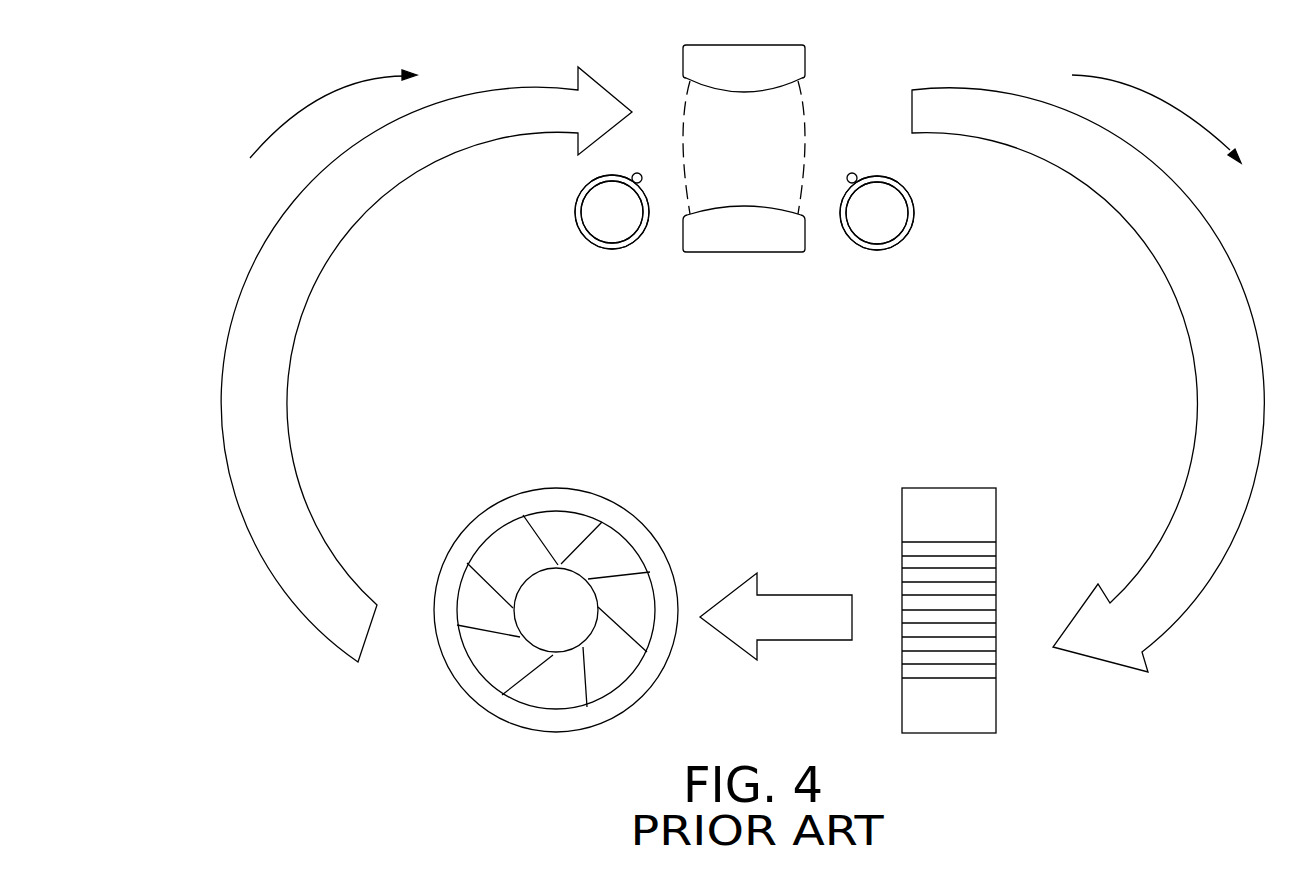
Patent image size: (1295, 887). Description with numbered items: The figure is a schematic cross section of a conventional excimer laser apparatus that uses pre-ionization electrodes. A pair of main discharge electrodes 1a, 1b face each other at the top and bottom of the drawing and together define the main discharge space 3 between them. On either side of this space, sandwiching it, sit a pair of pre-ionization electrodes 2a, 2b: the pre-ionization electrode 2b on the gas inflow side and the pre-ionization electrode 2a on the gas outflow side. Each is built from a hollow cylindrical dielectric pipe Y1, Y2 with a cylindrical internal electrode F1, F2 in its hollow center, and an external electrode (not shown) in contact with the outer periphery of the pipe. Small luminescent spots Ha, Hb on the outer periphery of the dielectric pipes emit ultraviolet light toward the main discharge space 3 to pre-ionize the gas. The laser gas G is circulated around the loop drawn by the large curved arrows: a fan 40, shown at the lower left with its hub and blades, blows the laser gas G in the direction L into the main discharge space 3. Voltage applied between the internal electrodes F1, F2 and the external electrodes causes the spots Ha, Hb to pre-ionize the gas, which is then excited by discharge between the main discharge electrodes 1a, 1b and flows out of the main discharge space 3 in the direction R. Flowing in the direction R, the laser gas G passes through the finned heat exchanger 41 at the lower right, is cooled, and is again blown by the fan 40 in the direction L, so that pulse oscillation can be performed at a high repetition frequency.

The main discharge electrode 1a is at (782, 62).
The main discharge electrode 1b is at (741, 246).
The main discharge space 3 is at (797, 97).
The pre-ionization electrode 2a is at (877, 267).
The pre-ionization electrode 2b is at (611, 266).
The luminescent spot Ha is at (849, 172).
The luminescent spot Hb is at (640, 172).
The dielectric pipe Y1 is at (906, 195).
The dielectric pipe Y2 is at (578, 196).
The internal electrode F1 is at (898, 219).
The internal electrode F2 is at (588, 218).
The laser gas G is at (275, 364).
The direction L is at (333, 113).
The direction R is at (1156, 115).
The fan 40 is at (573, 495).
The heat exchanger 41 is at (953, 510).